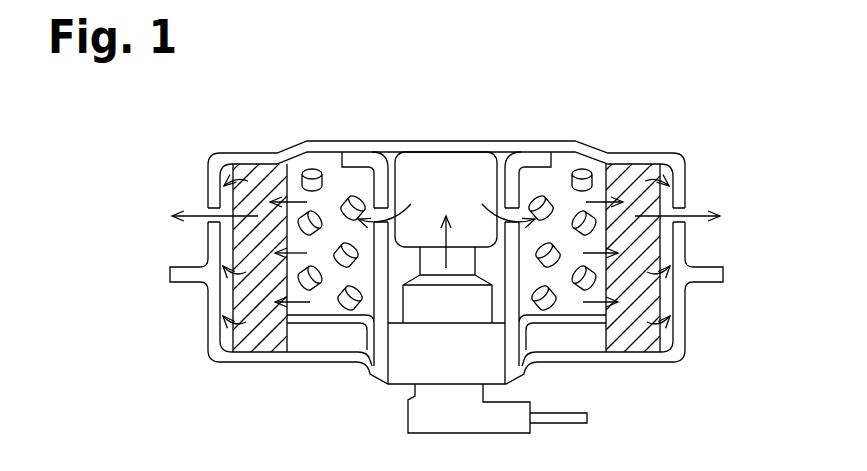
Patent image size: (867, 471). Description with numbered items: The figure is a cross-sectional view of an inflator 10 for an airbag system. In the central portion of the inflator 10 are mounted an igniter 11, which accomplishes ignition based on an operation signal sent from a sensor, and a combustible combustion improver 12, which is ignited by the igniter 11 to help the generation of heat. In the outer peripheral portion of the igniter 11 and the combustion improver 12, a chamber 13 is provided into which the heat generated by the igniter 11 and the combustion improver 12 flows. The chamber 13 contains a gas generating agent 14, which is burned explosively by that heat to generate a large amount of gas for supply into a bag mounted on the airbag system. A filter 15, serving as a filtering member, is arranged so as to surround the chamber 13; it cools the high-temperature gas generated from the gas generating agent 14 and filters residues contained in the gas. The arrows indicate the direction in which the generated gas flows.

The inflator 10 is at (707, 142).
The igniter 11 is at (412, 370).
The combustion improver 12 is at (425, 164).
The chamber 13 is at (538, 180).
The gas generating agent 14 is at (577, 168).
The filter 15 is at (259, 343).